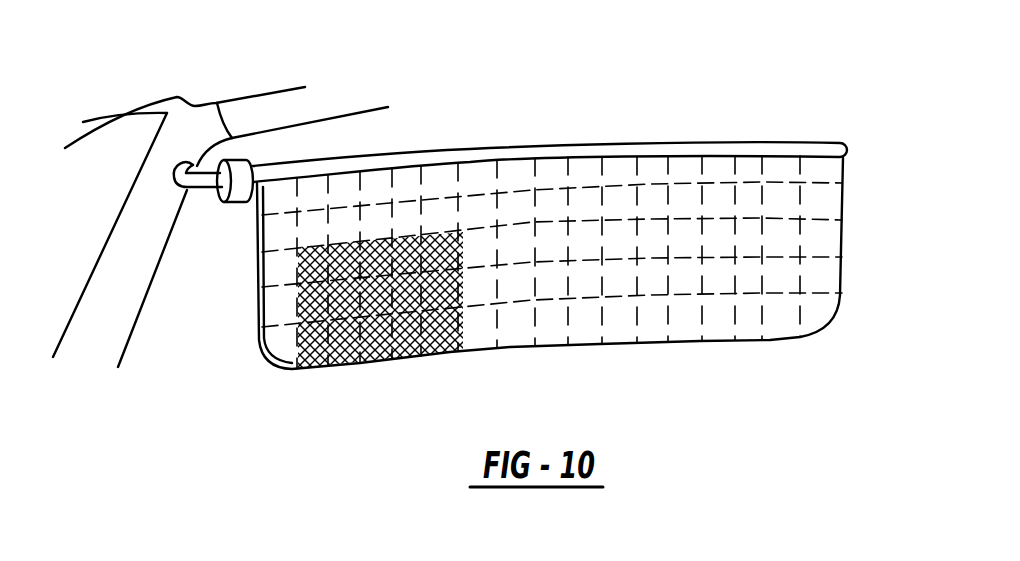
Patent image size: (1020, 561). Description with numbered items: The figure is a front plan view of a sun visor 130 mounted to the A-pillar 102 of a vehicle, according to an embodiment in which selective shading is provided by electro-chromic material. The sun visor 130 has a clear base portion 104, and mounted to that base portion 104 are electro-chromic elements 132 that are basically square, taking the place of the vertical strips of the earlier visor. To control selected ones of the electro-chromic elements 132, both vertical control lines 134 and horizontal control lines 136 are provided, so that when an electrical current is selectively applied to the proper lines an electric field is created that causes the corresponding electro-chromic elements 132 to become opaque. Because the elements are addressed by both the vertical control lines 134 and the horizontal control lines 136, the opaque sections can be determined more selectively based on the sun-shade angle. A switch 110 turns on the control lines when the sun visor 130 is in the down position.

The A-pillar 102 is at (135, 217).
The base portion 104 is at (828, 293).
The switch 110 is at (243, 203).
The sun visor 130 is at (848, 141).
The electro-chromic elements 132 is at (402, 328).
The vertical control lines 134 is at (532, 175).
The horizontal control lines 136 is at (827, 220).